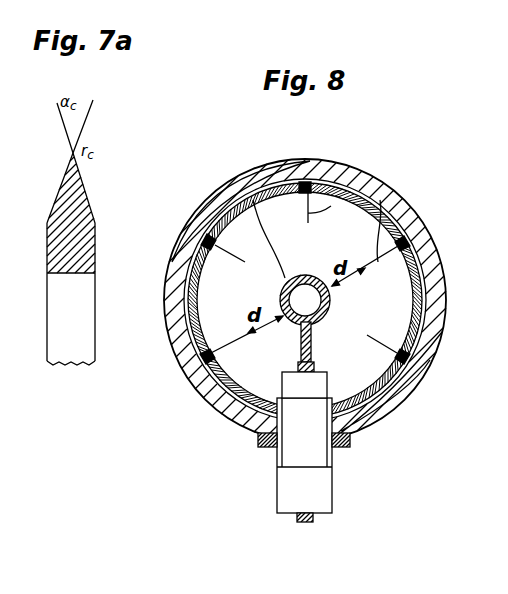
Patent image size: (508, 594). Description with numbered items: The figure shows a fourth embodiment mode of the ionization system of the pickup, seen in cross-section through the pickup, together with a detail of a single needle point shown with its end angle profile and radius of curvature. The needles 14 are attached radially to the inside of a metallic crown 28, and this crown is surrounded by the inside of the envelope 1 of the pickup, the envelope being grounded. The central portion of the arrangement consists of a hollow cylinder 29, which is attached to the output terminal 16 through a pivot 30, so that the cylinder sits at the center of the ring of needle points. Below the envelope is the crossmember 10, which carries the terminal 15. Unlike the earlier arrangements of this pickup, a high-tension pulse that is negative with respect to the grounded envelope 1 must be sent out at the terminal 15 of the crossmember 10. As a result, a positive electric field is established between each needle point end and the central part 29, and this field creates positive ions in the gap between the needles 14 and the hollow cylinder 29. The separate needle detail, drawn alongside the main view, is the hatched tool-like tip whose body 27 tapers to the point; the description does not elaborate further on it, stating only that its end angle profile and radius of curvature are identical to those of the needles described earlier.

In FIG. 8, the envelope 1 is at (433, 347).
In FIG. 8, the crossmember 10 is at (328, 493).
In FIG. 8, the needles 14 is at (380, 200).
In FIG. 8, the terminal 15 is at (297, 519).
In FIG. 8, the output terminal 16 is at (367, 413).
In FIG. 7A, the cutting tool 27 is at (88, 240).
In FIG. 8, the metallic crown 28 is at (403, 243).
In FIG. 8, the hollow cylinder 29 is at (240, 196).
In FIG. 8, the pivot 30 is at (222, 382).